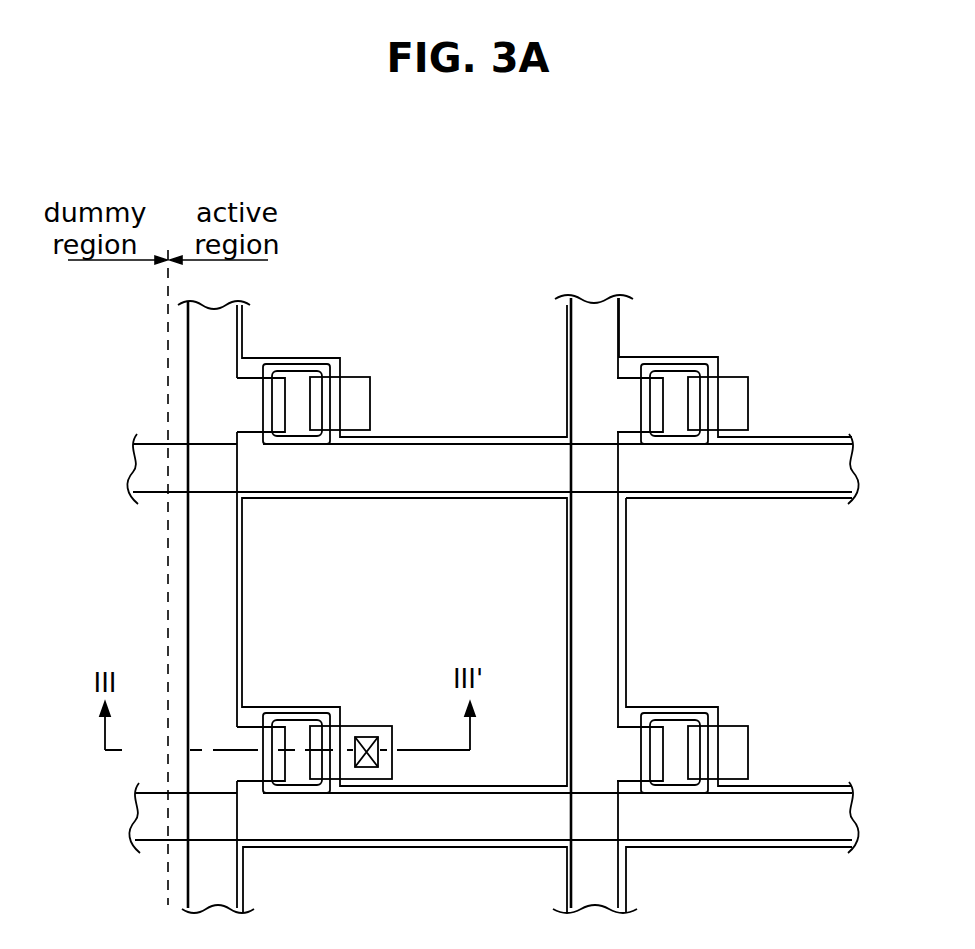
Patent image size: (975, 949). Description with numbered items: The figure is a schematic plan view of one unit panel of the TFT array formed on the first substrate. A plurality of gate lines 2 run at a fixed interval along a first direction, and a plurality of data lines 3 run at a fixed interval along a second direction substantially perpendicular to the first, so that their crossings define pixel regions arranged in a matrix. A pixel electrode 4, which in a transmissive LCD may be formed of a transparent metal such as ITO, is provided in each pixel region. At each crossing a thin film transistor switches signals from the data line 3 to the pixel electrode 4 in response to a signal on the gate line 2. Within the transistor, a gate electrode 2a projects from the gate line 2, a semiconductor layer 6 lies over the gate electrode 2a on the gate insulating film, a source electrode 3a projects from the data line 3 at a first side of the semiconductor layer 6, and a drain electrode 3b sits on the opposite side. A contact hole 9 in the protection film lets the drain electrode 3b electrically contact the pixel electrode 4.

The gate line 2 is at (146, 466).
The gate electrode 2a is at (318, 364).
The data line 3 is at (193, 352).
The source electrode 3a is at (247, 392).
The drain electrode 3b is at (363, 404).
The pixel electrode 4 is at (262, 612).
The semiconductor layer 6 is at (297, 440).
The contact hole 9 is at (373, 740).